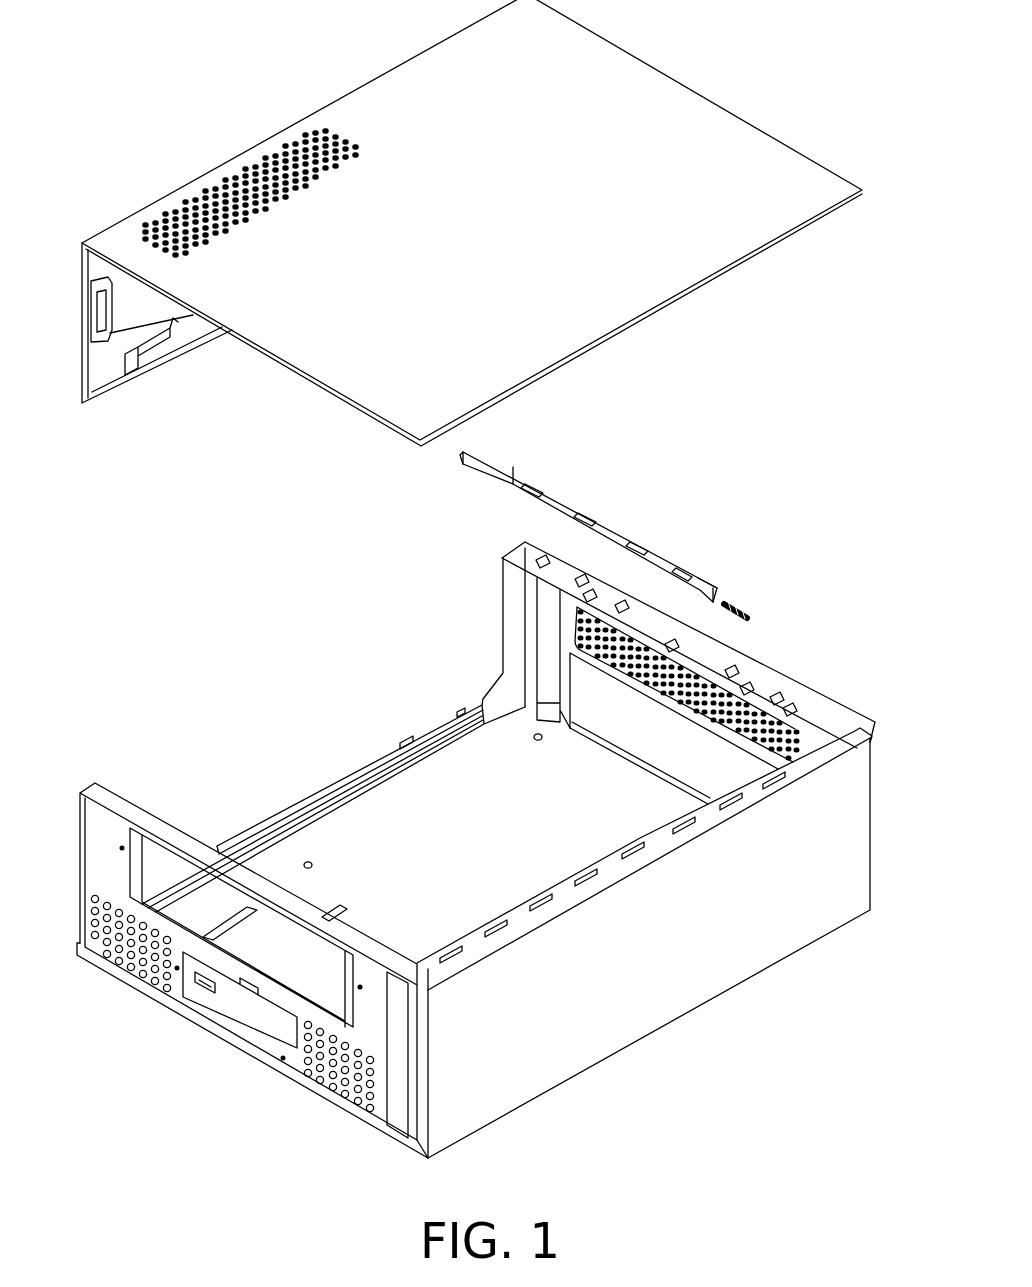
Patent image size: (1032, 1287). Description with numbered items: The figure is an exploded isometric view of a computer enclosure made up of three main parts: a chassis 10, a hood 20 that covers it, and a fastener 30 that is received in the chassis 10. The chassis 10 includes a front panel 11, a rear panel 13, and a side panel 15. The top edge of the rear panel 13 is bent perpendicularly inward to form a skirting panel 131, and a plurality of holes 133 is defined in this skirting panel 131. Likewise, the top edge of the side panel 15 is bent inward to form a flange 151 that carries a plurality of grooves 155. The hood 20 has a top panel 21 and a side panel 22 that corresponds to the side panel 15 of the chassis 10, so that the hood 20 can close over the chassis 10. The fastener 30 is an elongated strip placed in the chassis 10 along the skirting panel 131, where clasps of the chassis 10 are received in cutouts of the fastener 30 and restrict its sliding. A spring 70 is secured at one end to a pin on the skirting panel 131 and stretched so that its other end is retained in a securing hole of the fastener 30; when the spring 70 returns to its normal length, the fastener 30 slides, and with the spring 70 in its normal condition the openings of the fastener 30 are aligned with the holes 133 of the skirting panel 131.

The chassis 10 is at (476, 845).
The front panel 11 is at (370, 1033).
The rear panel 13 is at (626, 652).
The skirting panel 131 is at (525, 558).
The holes 133 is at (738, 667).
The side panel 15 is at (644, 943).
The flange 151 is at (644, 929).
The grooves 155 is at (540, 908).
The hood 20 is at (472, 223).
The top panel 21 is at (690, 142).
The side panel 22 is at (120, 343).
The fastener 30 is at (553, 503).
The spring 70 is at (732, 611).